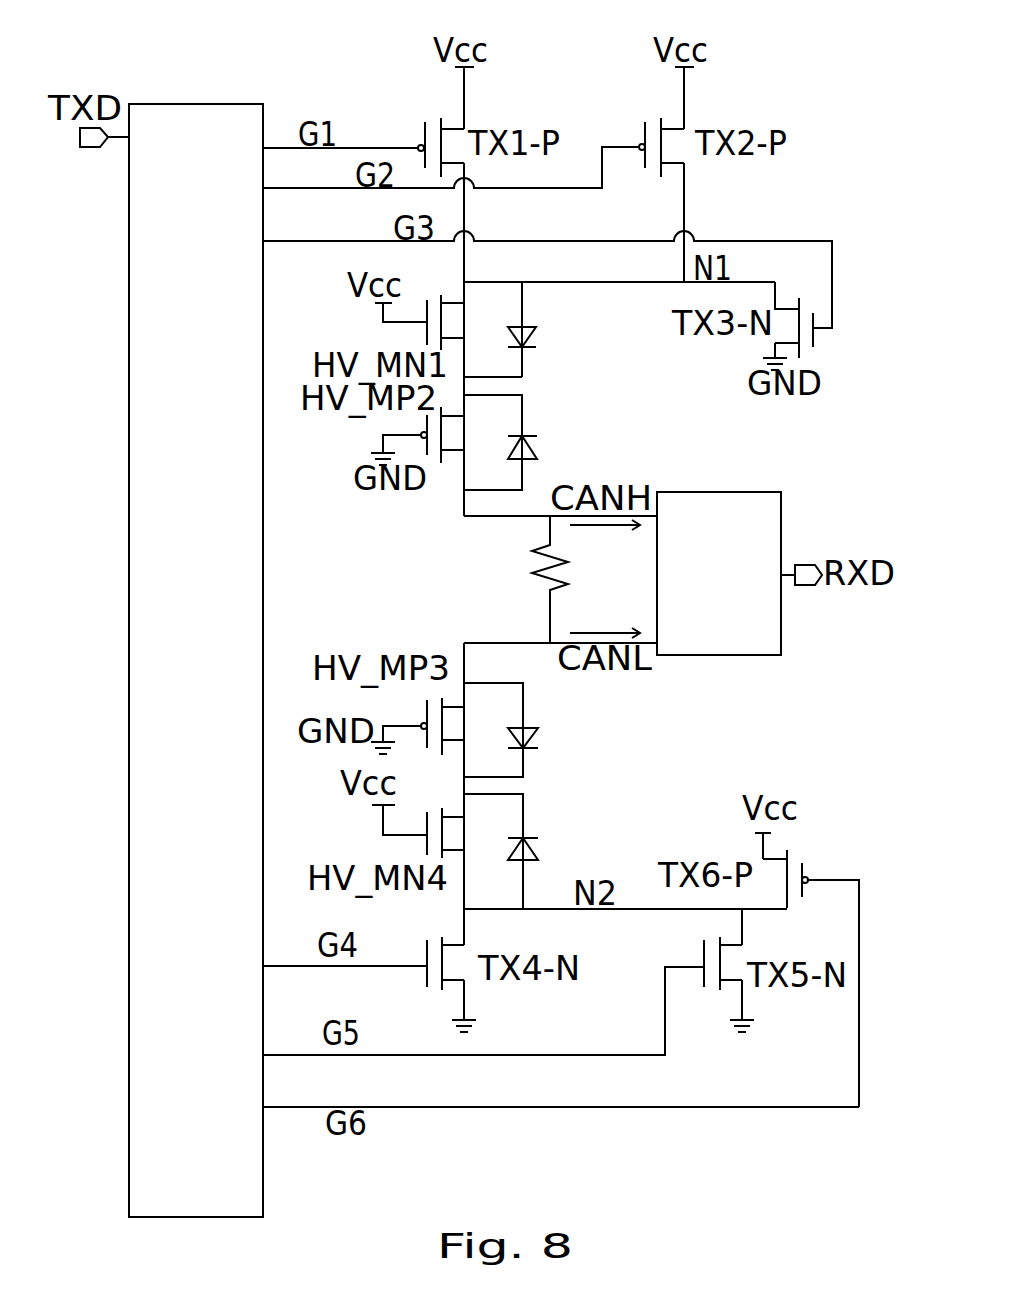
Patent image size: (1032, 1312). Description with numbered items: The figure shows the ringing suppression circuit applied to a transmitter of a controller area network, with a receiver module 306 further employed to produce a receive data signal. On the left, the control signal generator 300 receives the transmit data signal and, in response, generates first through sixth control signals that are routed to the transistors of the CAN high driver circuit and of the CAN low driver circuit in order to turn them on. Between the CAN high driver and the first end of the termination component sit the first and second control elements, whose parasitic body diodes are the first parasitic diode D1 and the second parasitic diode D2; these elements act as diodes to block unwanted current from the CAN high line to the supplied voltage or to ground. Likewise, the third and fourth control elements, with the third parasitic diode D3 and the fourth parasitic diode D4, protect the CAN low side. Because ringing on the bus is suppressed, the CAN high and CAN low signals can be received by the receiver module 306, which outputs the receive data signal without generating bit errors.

The control signal generator 300 is at (223, 104).
The receiver module 306 is at (752, 655).
The first parasitic diode D1 is at (525, 329).
The second parasitic diode D2 is at (515, 442).
The third parasitic diode D3 is at (525, 730).
The fourth parasitic diode D4 is at (519, 851).